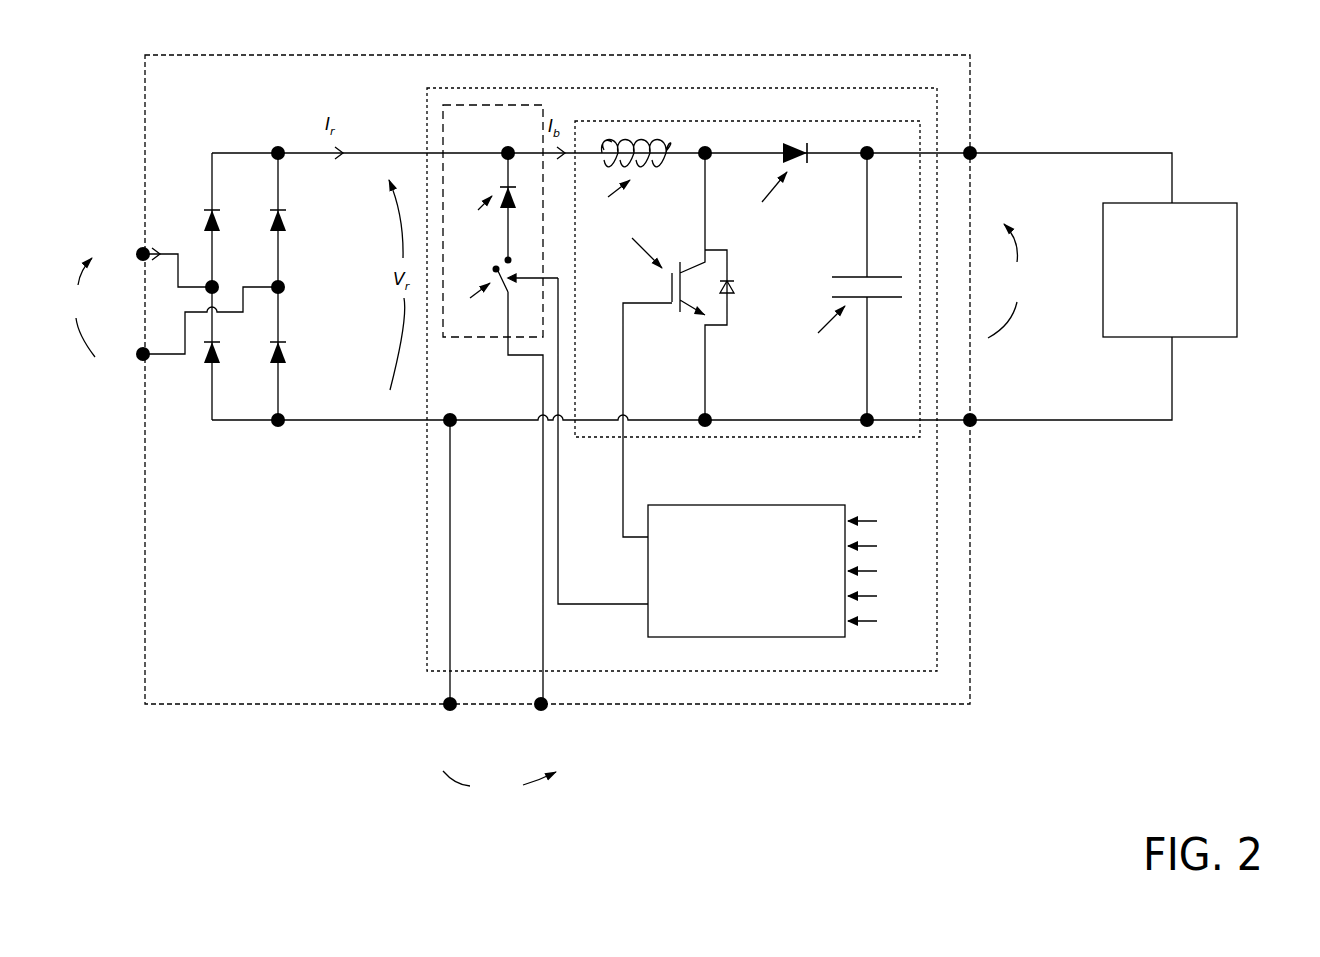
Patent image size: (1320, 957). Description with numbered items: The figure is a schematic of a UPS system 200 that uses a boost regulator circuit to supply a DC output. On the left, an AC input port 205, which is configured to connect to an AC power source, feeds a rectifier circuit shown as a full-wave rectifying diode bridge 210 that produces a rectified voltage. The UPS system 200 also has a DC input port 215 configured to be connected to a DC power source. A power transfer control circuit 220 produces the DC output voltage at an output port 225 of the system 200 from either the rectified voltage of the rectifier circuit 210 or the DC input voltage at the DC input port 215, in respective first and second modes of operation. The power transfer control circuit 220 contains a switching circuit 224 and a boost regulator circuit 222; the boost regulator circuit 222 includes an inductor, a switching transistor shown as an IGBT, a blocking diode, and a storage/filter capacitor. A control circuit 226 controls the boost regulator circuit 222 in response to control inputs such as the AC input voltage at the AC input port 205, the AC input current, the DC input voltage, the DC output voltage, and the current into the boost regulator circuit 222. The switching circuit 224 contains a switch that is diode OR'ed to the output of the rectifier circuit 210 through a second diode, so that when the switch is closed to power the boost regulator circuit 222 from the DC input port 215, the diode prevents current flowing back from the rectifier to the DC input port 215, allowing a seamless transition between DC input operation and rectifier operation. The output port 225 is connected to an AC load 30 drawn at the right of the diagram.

The UPS system 200 is at (558, 55).
The AC input port 205 is at (127, 323).
The full-wave rectifying diode bridge 210 is at (298, 314).
The DC input port 215 is at (473, 723).
The power transfer control circuit 220 is at (683, 88).
The boost regulator circuit 222 is at (748, 121).
The switching circuit 224 is at (488, 340).
The output port 225 is at (990, 341).
The control circuit 226 is at (745, 505).
The AC load 30 is at (1240, 270).